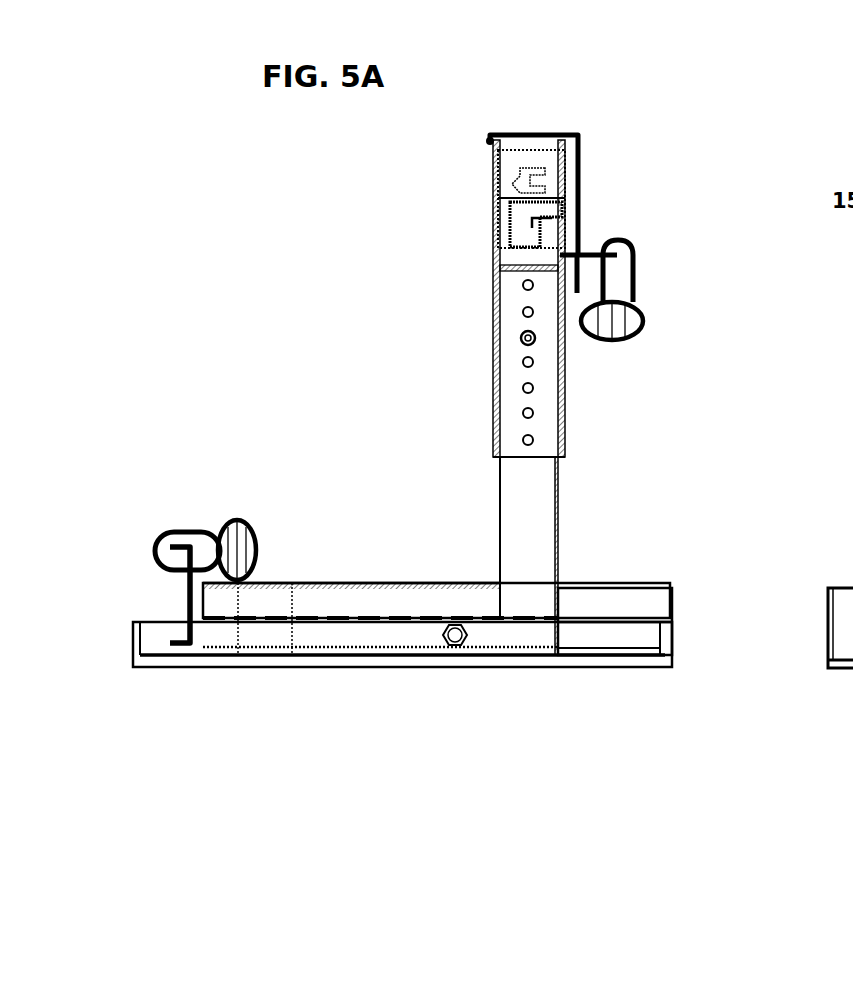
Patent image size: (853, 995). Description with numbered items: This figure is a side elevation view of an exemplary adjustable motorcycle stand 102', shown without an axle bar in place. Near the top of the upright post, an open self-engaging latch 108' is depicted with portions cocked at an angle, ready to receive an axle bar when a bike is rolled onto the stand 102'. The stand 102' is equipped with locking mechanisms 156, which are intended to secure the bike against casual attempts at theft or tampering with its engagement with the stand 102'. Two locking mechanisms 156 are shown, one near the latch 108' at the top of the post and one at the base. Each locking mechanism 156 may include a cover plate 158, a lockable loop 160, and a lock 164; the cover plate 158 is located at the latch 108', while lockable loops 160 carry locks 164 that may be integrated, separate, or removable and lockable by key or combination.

The adjustable motorcycle stand 102' is at (402, 699).
The open self-engaging latch 108' is at (609, 379).
The cover plate 158 is at (577, 200).
The locking mechanism 156 is at (462, 368).
The lockable loop 160 is at (175, 547).
The lock 164 is at (260, 550).